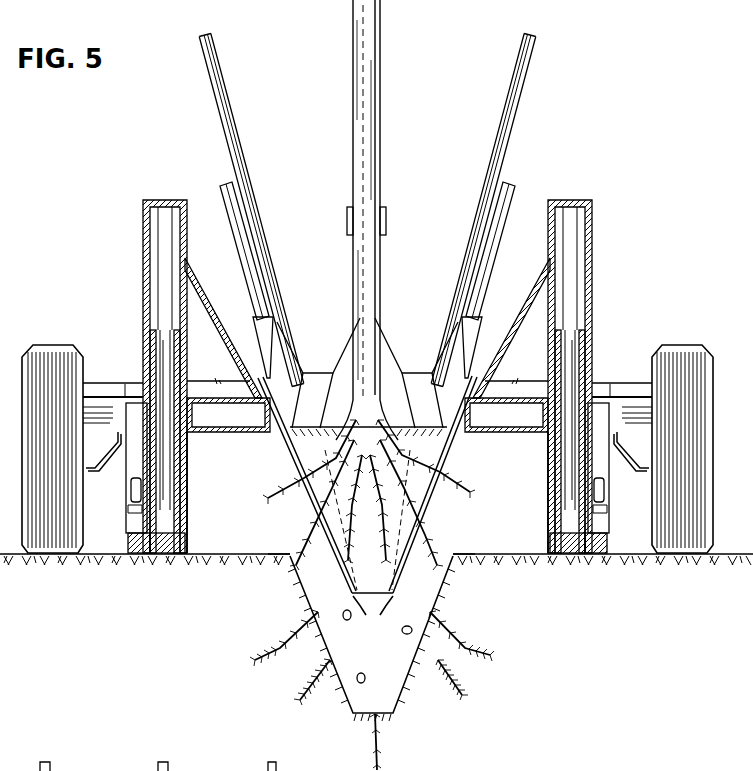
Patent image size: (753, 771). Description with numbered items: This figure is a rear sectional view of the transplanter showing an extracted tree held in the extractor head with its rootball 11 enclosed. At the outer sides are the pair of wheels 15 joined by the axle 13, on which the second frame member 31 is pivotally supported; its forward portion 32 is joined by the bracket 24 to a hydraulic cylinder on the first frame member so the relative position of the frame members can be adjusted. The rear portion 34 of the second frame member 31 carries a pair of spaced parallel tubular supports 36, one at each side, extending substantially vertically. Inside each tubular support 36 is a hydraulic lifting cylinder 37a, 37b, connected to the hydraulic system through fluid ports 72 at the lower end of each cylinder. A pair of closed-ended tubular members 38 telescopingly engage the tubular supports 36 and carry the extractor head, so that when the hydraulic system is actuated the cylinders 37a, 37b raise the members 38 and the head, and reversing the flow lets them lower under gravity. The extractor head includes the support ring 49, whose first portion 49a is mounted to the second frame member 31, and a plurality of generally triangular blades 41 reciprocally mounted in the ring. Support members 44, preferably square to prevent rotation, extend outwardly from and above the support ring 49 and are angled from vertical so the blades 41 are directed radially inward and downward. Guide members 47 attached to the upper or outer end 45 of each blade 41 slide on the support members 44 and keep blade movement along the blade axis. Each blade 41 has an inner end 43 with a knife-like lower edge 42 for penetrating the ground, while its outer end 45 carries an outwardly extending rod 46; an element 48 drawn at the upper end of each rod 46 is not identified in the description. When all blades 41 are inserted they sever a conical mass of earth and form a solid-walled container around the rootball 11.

The rootball 11 is at (346, 531).
The axle 13 is at (100, 386).
The wheels 15 is at (50, 345).
The bracket 24 is at (386, 244).
The second frame member 31 is at (133, 460).
The forward portion of second frame member 32 is at (137, 402).
The rear portion of second frame member 34 is at (115, 553).
The tubular supports 36 is at (187, 523).
The hydraulic lifting cylinder 37a is at (165, 497).
The hydraulic lifting cylinder 37b is at (567, 497).
The tubular members 38 is at (143, 240).
The blades 41 is at (338, 578).
The knife-like lower edge 42 is at (371, 638).
The inner end of blade 43 is at (338, 566).
The support members 44 is at (222, 195).
The outer end of blade 45 is at (342, 362).
The rod 46 is at (226, 108).
The guide members 47 is at (255, 323).
The stake sleeve 48 is at (199, 36).
The support ring 49 is at (272, 433).
The first portion of support ring 49a is at (462, 433).
The fluid ports 72 is at (166, 553).